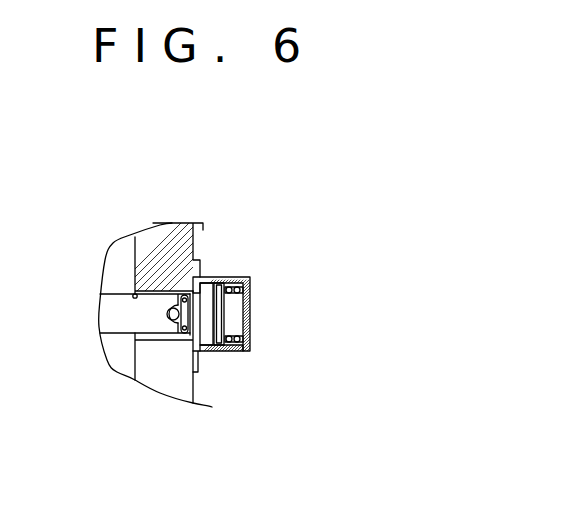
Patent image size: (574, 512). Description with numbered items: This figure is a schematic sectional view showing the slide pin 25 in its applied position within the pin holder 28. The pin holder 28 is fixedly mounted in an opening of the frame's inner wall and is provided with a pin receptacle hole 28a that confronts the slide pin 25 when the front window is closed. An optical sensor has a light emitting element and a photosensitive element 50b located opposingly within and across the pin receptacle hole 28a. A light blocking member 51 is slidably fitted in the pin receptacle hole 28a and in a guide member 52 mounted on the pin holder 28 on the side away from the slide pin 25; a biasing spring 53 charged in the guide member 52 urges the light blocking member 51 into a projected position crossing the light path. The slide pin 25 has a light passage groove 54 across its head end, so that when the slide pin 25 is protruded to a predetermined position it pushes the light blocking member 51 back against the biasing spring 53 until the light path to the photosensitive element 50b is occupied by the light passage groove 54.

The slide pin 25 is at (130, 312).
The pin holder 28 is at (165, 252).
The pin receptacle hole 28a is at (134, 294).
The photosensitive element 50b is at (200, 288).
The light blocking member 51 is at (208, 352).
The guide member 52 is at (252, 300).
The biasing spring 53 is at (238, 353).
The light passage groove 54 is at (178, 335).